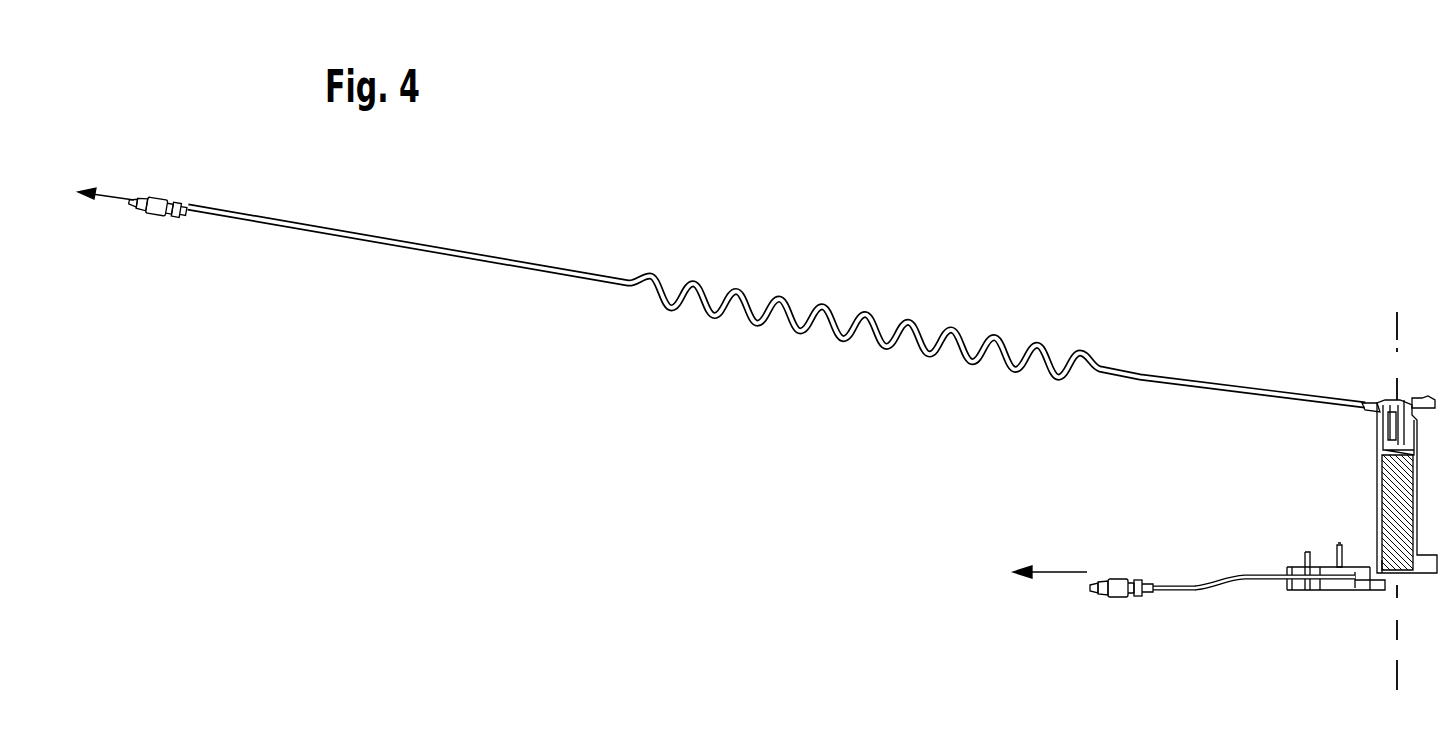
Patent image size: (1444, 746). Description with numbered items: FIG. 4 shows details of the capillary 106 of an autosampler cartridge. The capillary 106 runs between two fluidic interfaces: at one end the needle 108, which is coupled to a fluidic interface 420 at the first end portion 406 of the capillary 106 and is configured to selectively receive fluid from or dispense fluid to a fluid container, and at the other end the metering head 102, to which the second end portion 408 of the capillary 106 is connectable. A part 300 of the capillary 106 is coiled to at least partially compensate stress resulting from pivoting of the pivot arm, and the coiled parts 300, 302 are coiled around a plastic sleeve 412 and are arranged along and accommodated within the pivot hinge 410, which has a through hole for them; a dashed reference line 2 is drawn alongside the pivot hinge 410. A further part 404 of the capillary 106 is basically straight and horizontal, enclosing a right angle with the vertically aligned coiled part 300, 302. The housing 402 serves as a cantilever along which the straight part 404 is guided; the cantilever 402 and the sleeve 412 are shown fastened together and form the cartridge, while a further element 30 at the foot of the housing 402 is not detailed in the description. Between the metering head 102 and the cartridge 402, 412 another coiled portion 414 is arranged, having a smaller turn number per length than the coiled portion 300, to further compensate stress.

The longitudinal axis 2 is at (1384, 690).
The holder 30 is at (1388, 576).
The metering head 102 is at (118, 192).
The capillary 106 is at (1118, 336).
The needle 108 is at (1060, 571).
The coiled part of the capillary 300 is at (1378, 526).
The coiled part of the capillary 302 is at (1380, 446).
The housing 402 is at (1336, 545).
The straight part of the capillary 404 is at (1252, 580).
The first end portion of the capillary 406 is at (1165, 590).
The second end portion of the capillary 408 is at (196, 216).
The pivot hinge 410 is at (1392, 343).
The sleeve 412 is at (1378, 488).
The coiled portion 414 is at (865, 312).
The fluidic interface 420 is at (1100, 594).